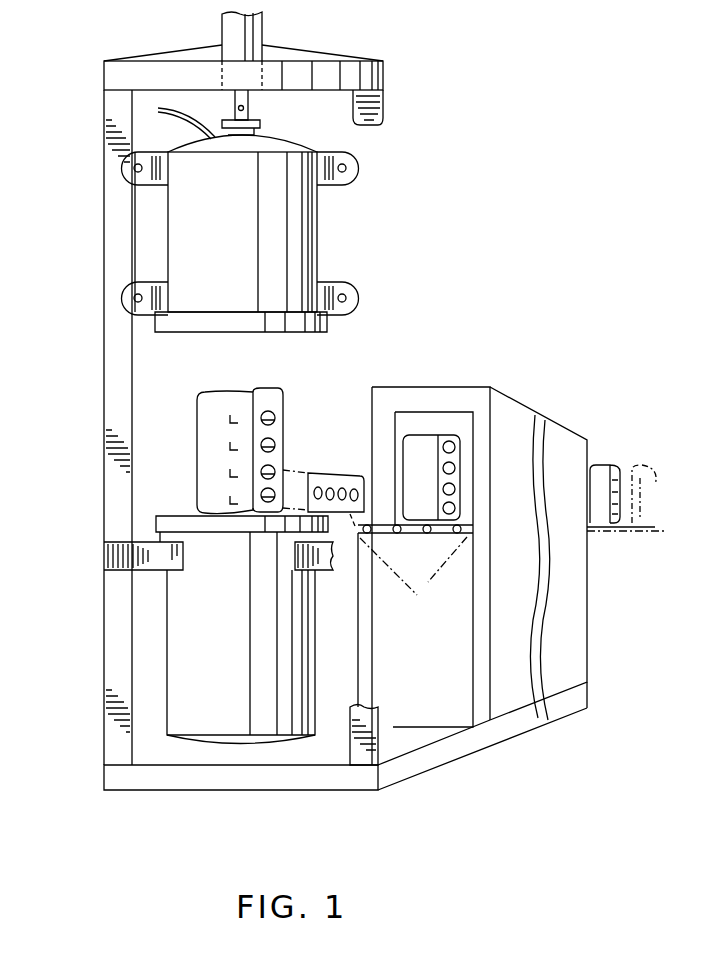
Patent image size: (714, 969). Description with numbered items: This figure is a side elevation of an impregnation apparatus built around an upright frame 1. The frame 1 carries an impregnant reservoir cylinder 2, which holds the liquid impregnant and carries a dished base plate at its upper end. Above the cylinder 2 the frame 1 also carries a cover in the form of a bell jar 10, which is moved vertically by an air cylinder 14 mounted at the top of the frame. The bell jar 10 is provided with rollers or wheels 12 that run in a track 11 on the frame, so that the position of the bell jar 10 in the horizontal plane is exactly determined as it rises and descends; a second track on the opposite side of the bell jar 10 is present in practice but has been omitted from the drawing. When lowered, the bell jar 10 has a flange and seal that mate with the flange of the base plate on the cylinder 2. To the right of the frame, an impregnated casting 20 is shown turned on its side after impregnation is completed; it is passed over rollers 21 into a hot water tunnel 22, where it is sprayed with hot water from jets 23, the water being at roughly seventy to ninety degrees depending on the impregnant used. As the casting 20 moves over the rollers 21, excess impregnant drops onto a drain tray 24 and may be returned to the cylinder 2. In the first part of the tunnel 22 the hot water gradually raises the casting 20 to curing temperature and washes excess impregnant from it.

The upright frame 1 is at (130, 458).
The impregnant reservoir cylinder 2 is at (178, 633).
The bell jar 10 is at (317, 236).
The track 11 is at (130, 363).
The rollers 12 is at (121, 165).
The air cylinder 14 is at (257, 30).
The impregnated casting 20 is at (225, 392).
The rollers 21 is at (365, 532).
The hot water tunnel 22 is at (445, 387).
The jets 23 is at (413, 455).
The drain tray 24 is at (430, 580).